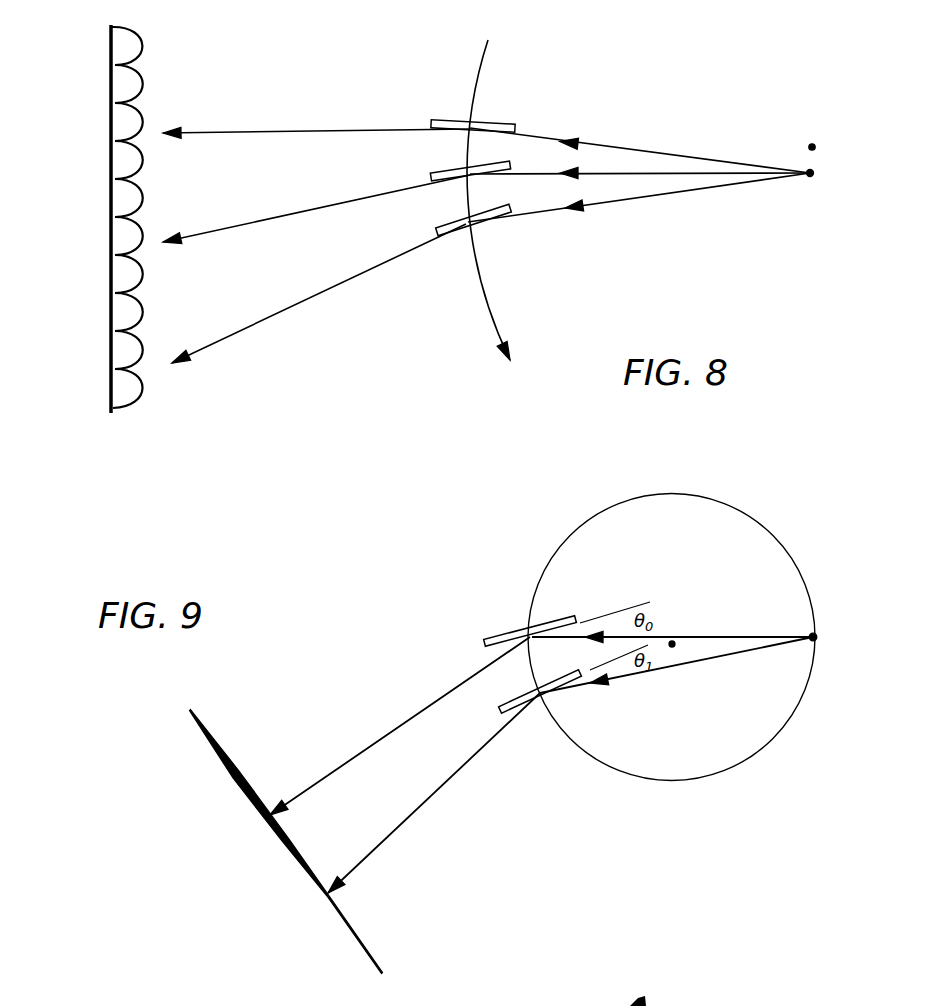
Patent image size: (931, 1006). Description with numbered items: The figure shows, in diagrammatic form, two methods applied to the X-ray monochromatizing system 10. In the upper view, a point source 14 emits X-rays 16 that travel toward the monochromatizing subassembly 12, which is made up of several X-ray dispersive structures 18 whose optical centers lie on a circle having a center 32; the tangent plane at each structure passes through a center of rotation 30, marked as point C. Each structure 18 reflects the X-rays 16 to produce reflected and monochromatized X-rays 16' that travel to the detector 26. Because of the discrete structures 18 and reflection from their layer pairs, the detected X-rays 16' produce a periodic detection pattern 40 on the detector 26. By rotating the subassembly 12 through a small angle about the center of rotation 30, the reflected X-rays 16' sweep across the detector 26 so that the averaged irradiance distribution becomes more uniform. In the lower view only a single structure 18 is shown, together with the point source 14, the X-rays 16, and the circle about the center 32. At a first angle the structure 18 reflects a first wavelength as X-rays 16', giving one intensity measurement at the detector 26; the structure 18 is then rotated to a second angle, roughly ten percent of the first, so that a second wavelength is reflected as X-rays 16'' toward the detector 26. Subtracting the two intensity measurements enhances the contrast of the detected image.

In FIG. 8, the system for monochromatizing X-rays 10 is at (603, 120).
In FIG. 8, the monochromatizing subassembly 12 is at (525, 107).
In FIG. 8, the point source 14 is at (810, 177).
In FIG. 9, the point source 14 is at (817, 637).
In FIG. 9, the X-rays 16 is at (672, 656).
In FIG. 9, the reflected and monochromatized X-rays 16' is at (400, 726).
In FIG. 9, the second wavelength X-rays 16'' is at (434, 793).
In FIG. 9, the X-ray dispersive structure 18 is at (500, 637).
In FIG. 8, the detector 26 is at (111, 353).
In FIG. 8, the center of rotation 30 is at (810, 148).
In FIG. 8, the center 32 is at (648, 160).
In FIG. 9, the center 32 is at (672, 641).
In FIG. 8, the periodic detection pattern 40 is at (135, 398).